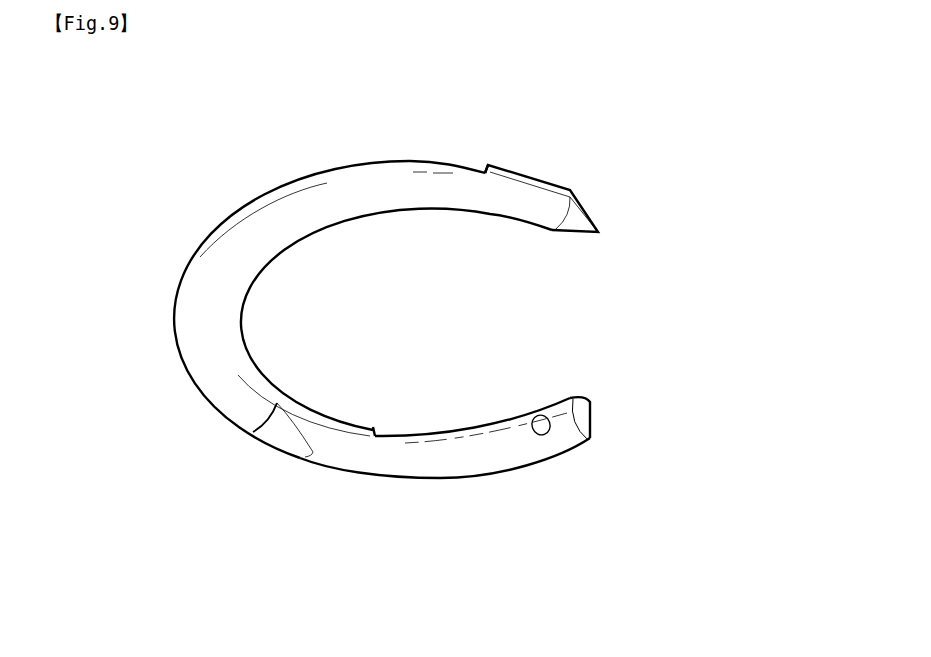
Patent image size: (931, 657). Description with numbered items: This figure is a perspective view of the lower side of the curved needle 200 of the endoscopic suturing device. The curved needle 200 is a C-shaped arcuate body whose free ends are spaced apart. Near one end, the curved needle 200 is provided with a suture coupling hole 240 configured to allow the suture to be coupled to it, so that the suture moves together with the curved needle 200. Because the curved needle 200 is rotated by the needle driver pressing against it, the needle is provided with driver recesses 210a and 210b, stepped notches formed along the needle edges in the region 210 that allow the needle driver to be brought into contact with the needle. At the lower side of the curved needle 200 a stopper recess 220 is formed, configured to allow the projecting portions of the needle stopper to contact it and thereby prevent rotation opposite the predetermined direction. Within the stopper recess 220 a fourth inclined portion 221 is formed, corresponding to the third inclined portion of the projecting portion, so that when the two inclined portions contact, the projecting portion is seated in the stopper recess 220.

The curved needle 200 is at (207, 258).
The driver recess 210 is at (533, 130).
The driver recess 210a is at (384, 425).
The driver recess 210b is at (483, 171).
The stopper recess 220 is at (295, 474).
The fourth inclined portion 221 is at (281, 440).
The suture coupling hole 240 is at (543, 424).